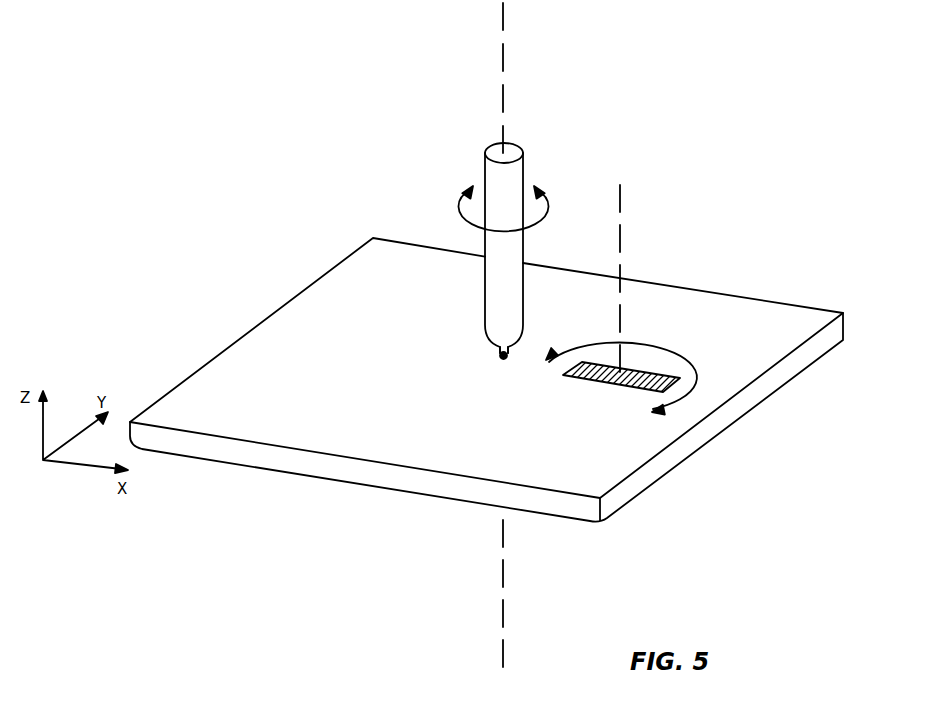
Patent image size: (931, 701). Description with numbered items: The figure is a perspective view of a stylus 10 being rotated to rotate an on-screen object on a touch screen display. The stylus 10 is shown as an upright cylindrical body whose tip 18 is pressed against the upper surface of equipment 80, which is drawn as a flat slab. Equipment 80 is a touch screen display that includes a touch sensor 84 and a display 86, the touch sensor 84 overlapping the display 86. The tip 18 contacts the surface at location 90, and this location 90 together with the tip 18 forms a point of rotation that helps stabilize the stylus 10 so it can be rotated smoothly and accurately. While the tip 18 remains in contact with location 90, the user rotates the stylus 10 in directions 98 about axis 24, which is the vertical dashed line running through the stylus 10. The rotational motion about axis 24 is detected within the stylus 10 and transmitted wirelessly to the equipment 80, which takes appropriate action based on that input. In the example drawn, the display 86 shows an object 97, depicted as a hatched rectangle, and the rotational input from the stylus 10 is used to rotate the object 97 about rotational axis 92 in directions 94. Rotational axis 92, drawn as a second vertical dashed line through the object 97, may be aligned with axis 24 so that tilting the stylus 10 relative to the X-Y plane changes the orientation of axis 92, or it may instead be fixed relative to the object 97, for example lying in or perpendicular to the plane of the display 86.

The stylus 10 is at (523, 163).
The tip 18 is at (483, 350).
The axis 24 is at (503, 16).
The equipment 80 is at (503, 380).
The touch sensor 84 is at (486, 368).
The display 86 is at (724, 318).
The location 90 is at (495, 362).
The rotational axis 92 is at (620, 196).
The directions 94 is at (694, 366).
The object 97 is at (583, 381).
The directions 98 is at (458, 203).